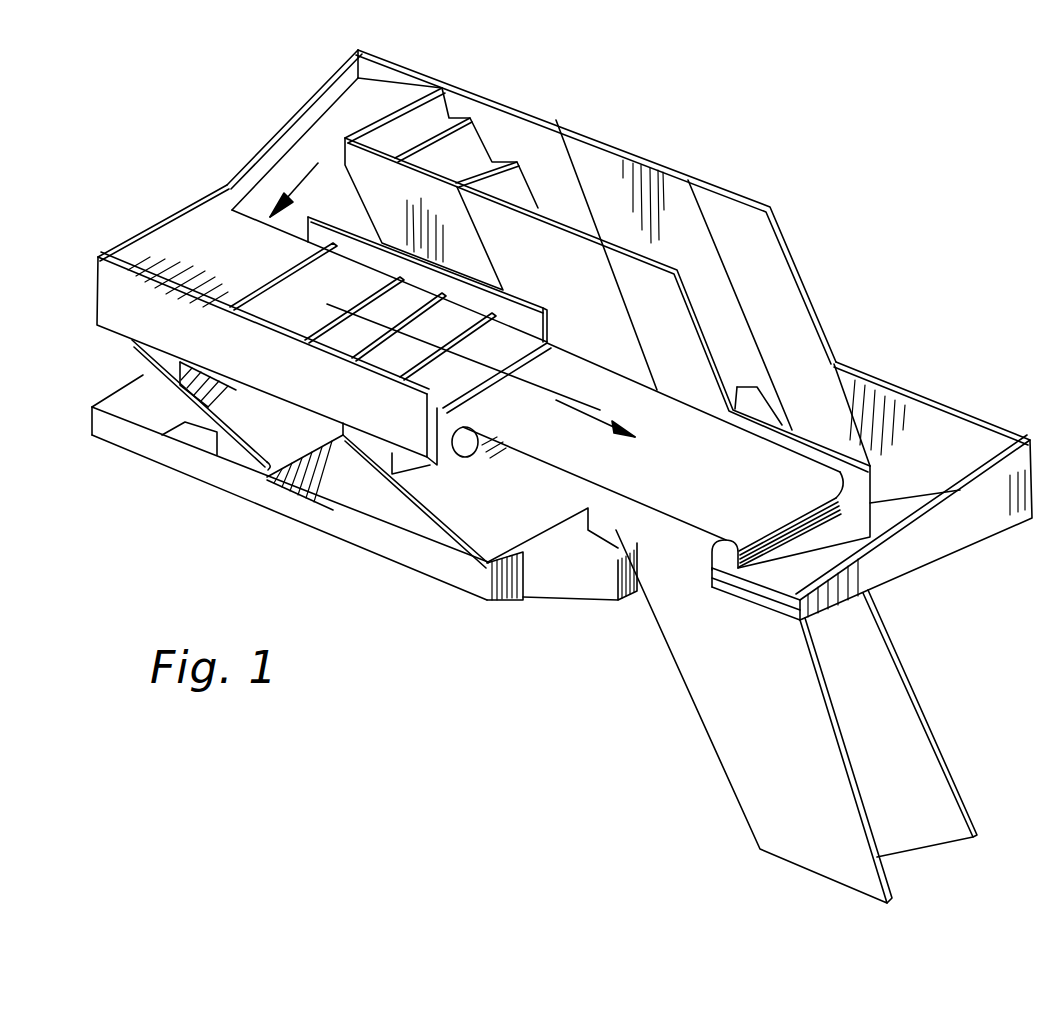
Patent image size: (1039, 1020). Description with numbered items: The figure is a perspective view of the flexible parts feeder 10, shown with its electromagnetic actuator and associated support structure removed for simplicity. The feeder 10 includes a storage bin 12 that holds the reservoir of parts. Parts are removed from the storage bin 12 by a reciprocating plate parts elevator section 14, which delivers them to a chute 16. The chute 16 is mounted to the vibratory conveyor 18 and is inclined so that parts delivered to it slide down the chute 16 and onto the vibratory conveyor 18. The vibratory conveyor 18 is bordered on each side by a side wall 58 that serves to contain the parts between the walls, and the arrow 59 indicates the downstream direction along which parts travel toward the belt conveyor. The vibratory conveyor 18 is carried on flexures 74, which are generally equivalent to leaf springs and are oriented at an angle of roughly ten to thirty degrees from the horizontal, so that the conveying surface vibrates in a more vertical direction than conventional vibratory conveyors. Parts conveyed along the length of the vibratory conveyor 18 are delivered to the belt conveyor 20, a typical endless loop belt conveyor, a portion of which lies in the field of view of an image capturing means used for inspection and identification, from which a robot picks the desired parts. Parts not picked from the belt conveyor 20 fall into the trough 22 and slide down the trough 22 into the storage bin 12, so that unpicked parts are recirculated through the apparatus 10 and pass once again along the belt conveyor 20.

The flexible parts feeder 10 is at (718, 130).
The storage bin 12 is at (927, 440).
The reciprocating plate parts elevator section 14 is at (618, 143).
The chute 16 is at (342, 110).
The vibratory conveyor 18 is at (220, 243).
The belt conveyor 20 is at (617, 530).
The trough 22 is at (840, 553).
The side wall 58 is at (518, 298).
The arrow 59 is at (560, 412).
The flexures 74 is at (163, 433).